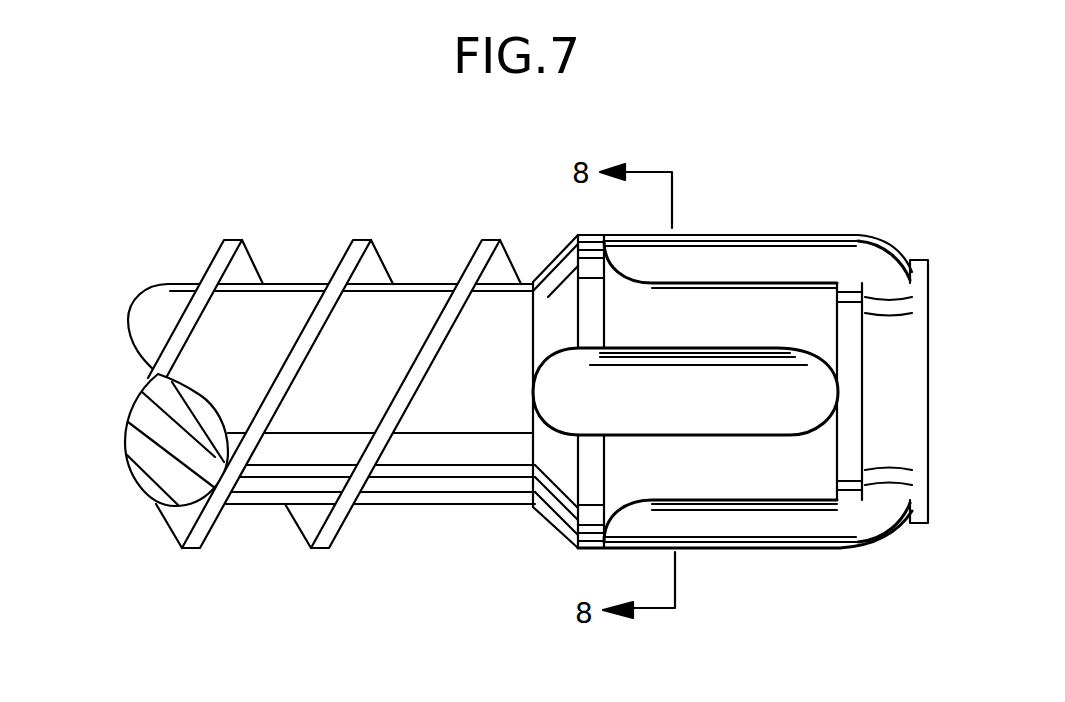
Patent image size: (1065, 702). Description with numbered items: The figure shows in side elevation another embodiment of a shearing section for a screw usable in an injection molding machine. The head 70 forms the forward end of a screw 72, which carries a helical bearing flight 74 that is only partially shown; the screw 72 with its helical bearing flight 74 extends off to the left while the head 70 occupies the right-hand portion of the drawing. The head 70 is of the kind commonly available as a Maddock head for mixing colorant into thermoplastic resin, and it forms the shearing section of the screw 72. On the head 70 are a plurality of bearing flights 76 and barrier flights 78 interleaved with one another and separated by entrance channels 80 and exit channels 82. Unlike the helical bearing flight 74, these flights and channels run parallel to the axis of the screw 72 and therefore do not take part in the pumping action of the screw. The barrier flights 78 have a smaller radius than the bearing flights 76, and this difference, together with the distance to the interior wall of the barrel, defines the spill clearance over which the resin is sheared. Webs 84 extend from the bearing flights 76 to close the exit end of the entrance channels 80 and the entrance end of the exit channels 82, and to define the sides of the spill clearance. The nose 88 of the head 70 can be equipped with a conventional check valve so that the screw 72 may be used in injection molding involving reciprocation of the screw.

The head 70 is at (769, 369).
The screw 72 is at (447, 310).
The helical bearing flight 74 is at (323, 548).
The bearing flights 76 is at (757, 463).
The barrier flights 78 is at (686, 302).
The entrance channels 80 is at (788, 394).
The exit channels 82 is at (873, 243).
The webs 84 is at (851, 336).
The nose 88 is at (928, 472).